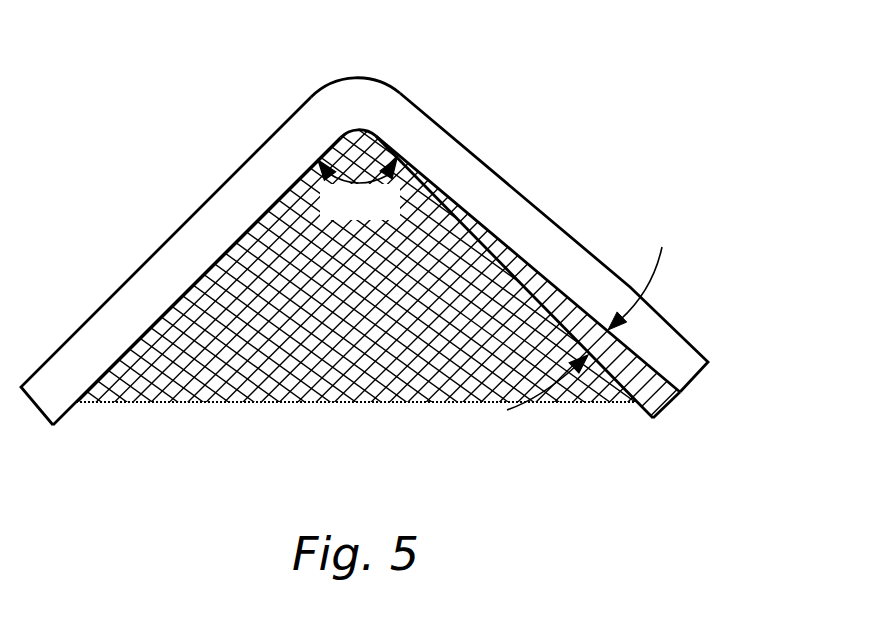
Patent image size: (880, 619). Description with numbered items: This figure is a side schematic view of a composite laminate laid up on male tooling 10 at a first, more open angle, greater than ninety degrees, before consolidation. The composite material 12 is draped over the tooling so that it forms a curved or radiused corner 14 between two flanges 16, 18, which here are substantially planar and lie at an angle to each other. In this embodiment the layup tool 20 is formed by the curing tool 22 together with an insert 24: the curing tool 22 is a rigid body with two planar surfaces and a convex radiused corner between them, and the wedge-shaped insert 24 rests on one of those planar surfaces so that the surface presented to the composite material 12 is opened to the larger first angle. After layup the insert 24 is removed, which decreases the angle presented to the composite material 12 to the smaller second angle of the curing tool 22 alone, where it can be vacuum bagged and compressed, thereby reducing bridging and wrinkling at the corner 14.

The male tooling 10 is at (134, 406).
The composite material 12 is at (364, 221).
The radiused corner 14 is at (354, 82).
The flange 16 is at (110, 322).
The flange 18 is at (565, 262).
The layup tool 20 is at (634, 440).
The curing tool 22 is at (183, 358).
The insert 24 is at (664, 401).